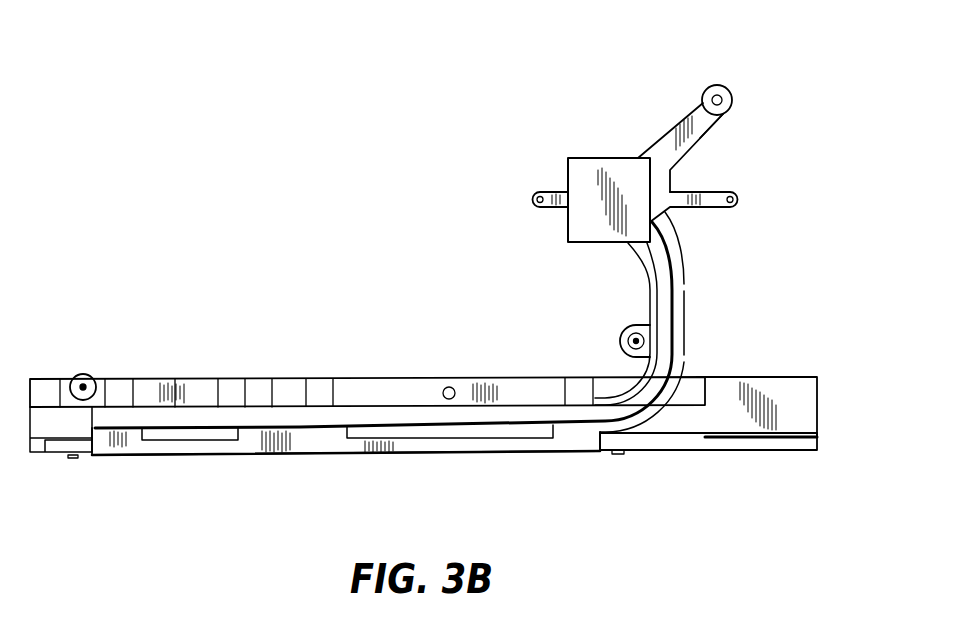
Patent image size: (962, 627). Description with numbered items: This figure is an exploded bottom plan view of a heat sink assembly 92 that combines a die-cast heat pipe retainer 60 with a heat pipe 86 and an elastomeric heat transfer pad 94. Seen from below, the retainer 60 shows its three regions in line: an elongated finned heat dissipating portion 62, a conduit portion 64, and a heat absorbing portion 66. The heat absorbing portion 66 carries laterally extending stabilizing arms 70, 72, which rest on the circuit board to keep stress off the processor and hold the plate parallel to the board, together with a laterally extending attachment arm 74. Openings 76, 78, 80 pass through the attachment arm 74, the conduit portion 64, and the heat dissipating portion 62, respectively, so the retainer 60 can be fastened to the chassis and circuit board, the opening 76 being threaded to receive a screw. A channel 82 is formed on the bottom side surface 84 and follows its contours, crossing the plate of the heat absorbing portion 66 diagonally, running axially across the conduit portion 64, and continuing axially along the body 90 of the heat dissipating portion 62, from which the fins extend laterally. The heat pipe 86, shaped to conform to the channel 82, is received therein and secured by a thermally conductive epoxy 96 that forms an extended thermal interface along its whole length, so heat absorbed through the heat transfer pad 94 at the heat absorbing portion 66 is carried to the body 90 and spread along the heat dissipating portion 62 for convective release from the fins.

The heat pipe retainer 60 is at (442, 372).
The heat dissipating portion 62 is at (336, 462).
The conduit portion 64 is at (436, 322).
The heat absorbing portion 66 is at (713, 118).
The stabilizing arm 70 is at (546, 208).
The stabilizing arm 72 is at (718, 190).
The attachment arm 74 is at (723, 125).
The opening 76 is at (725, 92).
The opening 78 is at (633, 326).
The opening 80 is at (80, 374).
The channel 82 is at (677, 253).
The bottom side surface 84 is at (522, 388).
The heat pipe 86 is at (670, 320).
The body 90 is at (818, 412).
The heat sink assembly 92 is at (342, 372).
The heat transfer pad 94 is at (586, 158).
The thermally conductive epoxy 96 is at (172, 452).